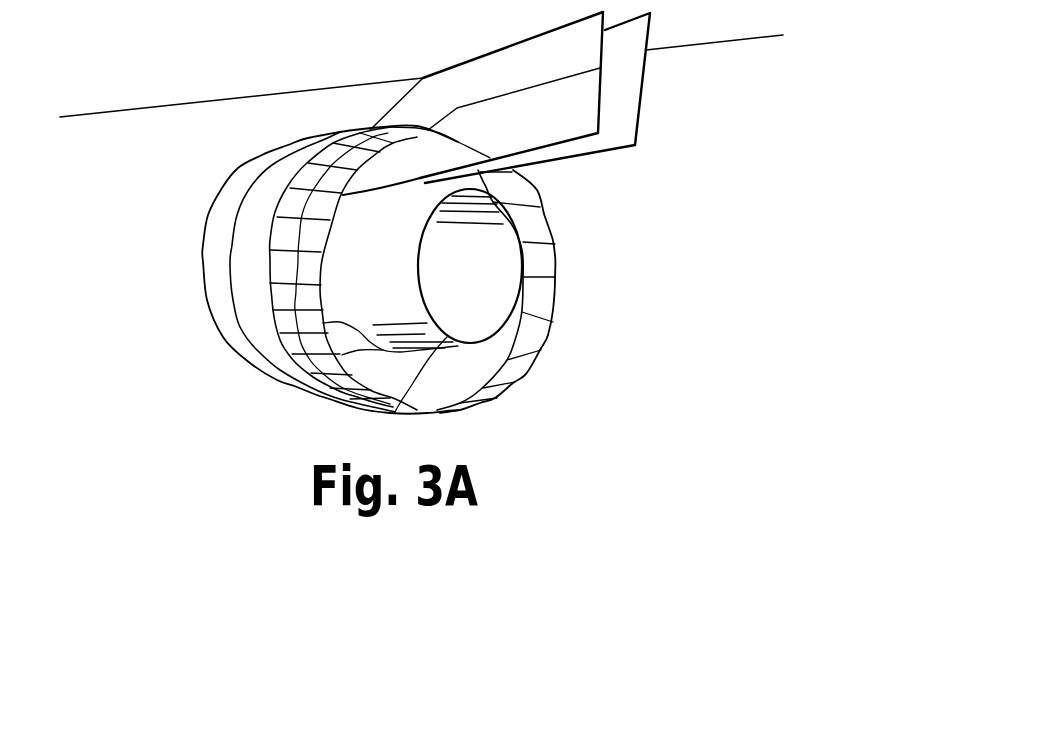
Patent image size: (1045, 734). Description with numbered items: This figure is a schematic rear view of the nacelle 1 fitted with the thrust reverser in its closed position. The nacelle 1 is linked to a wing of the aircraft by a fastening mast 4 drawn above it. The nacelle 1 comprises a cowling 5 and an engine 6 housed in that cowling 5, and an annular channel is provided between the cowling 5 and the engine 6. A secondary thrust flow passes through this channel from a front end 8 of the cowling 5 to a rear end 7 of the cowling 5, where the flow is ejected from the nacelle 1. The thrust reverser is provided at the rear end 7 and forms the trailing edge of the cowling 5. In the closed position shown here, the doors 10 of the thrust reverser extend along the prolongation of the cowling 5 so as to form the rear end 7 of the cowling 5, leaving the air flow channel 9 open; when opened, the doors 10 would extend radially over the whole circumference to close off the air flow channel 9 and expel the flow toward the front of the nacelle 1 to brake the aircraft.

The nacelle 1 is at (363, 224).
The fastening mast 4 is at (487, 78).
The cowling 5 is at (247, 293).
The engine 6 is at (447, 280).
The rear end of the cowling 7 is at (286, 162).
The front end of the cowling 8 is at (222, 210).
The air flow channel 9 is at (472, 181).
The doors 10 is at (307, 232).